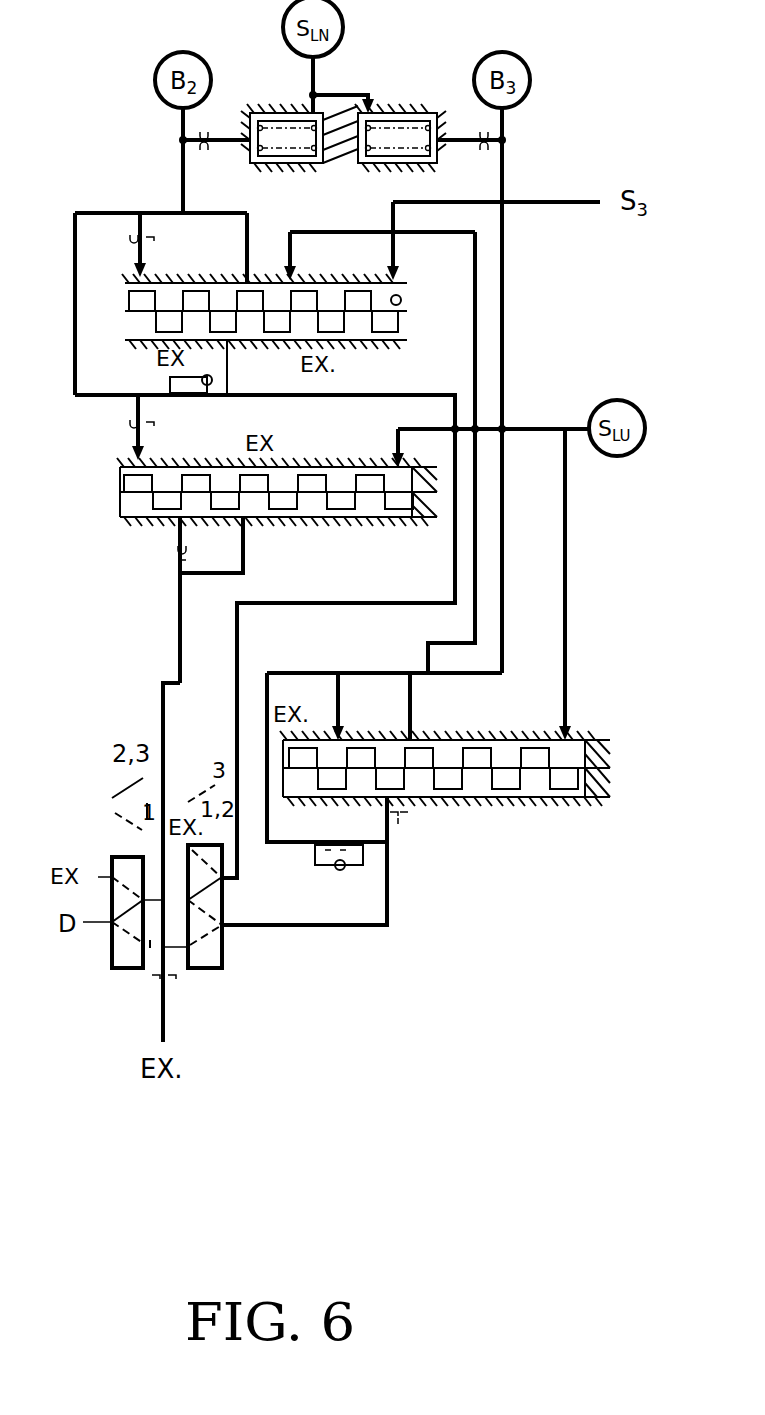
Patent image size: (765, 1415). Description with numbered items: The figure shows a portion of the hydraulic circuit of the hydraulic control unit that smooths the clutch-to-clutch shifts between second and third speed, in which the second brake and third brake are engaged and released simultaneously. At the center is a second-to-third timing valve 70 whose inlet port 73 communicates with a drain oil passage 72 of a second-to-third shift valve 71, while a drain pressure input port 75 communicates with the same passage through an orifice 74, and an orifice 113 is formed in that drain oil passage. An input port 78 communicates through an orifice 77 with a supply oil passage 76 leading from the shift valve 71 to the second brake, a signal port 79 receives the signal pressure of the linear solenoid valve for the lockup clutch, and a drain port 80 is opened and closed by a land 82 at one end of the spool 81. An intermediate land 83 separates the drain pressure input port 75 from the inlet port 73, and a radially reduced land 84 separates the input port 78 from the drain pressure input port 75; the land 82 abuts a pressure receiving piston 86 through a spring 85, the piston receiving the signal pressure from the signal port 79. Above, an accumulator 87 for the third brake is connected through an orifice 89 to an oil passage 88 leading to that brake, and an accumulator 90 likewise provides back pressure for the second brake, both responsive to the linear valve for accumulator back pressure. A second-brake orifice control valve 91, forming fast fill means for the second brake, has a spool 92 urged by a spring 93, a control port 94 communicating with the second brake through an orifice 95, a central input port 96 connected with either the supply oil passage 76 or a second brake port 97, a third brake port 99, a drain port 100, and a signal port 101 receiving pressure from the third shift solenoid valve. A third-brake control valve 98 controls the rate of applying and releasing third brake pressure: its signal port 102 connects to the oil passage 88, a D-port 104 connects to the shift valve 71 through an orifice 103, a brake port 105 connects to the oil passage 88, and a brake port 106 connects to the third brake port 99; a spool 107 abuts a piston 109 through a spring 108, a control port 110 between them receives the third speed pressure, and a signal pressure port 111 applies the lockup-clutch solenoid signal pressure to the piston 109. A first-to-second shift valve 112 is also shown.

The 2-3 timing valve 70 is at (112, 513).
The 2-3 shift valve 71 is at (236, 962).
The drain oil passage 72 is at (160, 688).
The inlet port 73 is at (258, 527).
The orifice 74 is at (175, 560).
The drain pressure input port 75 is at (140, 528).
The supply oil passage 76 is at (433, 387).
The orifice 77 is at (130, 425).
The input port 78 is at (118, 490).
The signal port 79 is at (425, 455).
The drain port 80 is at (285, 470).
The spool 81 is at (205, 470).
The land 82 is at (305, 527).
The intermediate land 83 is at (211, 532).
The radially reduced land 84 is at (165, 470).
The spring 85 is at (340, 470).
The pressure receiving piston 86 is at (385, 527).
The accumulator 87 is at (407, 112).
The oil passage 88 is at (505, 236).
The orifice 89 is at (505, 138).
The accumulator 90 is at (273, 112).
The B-2 orifice control valve 91 is at (420, 329).
The spool 92 is at (325, 280).
The spring 93 is at (405, 300).
The control port 94 is at (135, 290).
The orifice 95 is at (130, 212).
The input port 96 is at (228, 362).
The second brake port 97 is at (225, 283).
The B-3 control valve 98 is at (592, 733).
The third brake port 99 is at (363, 248).
The drain port 100 is at (325, 338).
The signal port 101 is at (415, 275).
The signal port 102 is at (352, 735).
The orifice 103 is at (388, 828).
The D-port 104 is at (385, 795).
The brake port 105 is at (418, 740).
The brake port 106 is at (440, 744).
The spool 107 is at (455, 797).
The spring 108 is at (539, 584).
The piston 109 is at (560, 792).
The control port 110 is at (500, 792).
The signal pressure port 111 is at (600, 745).
The 1-2 shift valve 112 is at (106, 978).
The orifice 113 is at (175, 985).